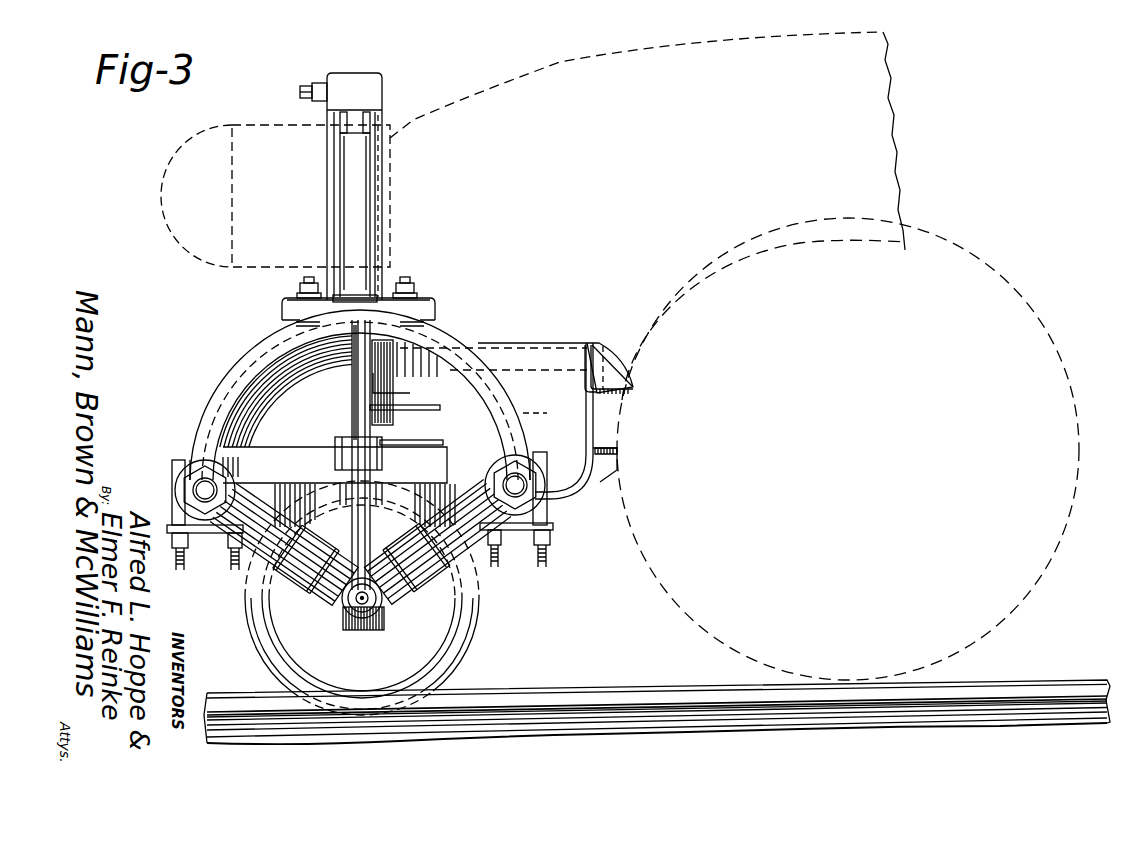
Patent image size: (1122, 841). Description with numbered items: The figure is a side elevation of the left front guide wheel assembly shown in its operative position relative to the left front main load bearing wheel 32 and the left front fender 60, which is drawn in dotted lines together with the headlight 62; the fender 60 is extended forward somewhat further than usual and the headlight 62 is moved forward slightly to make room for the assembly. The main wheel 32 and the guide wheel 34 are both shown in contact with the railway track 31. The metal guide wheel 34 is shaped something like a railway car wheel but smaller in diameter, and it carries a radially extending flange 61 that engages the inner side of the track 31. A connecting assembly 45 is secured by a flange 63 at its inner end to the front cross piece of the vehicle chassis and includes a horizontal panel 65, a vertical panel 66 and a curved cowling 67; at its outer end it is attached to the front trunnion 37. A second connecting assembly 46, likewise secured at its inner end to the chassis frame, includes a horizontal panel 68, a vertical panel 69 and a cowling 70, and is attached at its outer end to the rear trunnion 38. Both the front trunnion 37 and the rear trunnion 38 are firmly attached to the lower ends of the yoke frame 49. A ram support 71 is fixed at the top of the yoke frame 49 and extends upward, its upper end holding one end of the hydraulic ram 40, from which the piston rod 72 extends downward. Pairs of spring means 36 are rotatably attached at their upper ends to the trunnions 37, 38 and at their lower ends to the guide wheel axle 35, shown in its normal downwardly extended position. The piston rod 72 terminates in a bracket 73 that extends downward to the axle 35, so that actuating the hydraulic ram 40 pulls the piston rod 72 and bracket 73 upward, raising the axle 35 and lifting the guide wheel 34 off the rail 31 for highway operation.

The railway track 31 is at (598, 692).
The left front main load bearing wheel 32 is at (890, 387).
The guide wheel 34 is at (432, 621).
The guide wheel axle 35 is at (360, 605).
The spring means 36 is at (247, 578).
The front trunnion 37 is at (200, 488).
The rear trunnion 38 is at (522, 490).
The hydraulic ram 40 is at (362, 157).
The connecting assembly 45 is at (238, 370).
The connecting assembly 46 is at (598, 417).
The yoke frame 49 is at (205, 413).
The left front fender 60 is at (906, 115).
The flange 61 is at (462, 660).
The headlight 62 is at (203, 212).
The flange 63 is at (389, 392).
The horizontal panel 65 is at (322, 446).
The vertical panel 66 is at (372, 369).
The curved cowling 67 is at (286, 391).
The horizontal panel 68 is at (614, 392).
The vertical panel 69 is at (592, 372).
The cowling 70 is at (530, 345).
The ram support 71 is at (327, 179).
The piston rod 72 is at (352, 368).
The bracket 73 is at (337, 463).